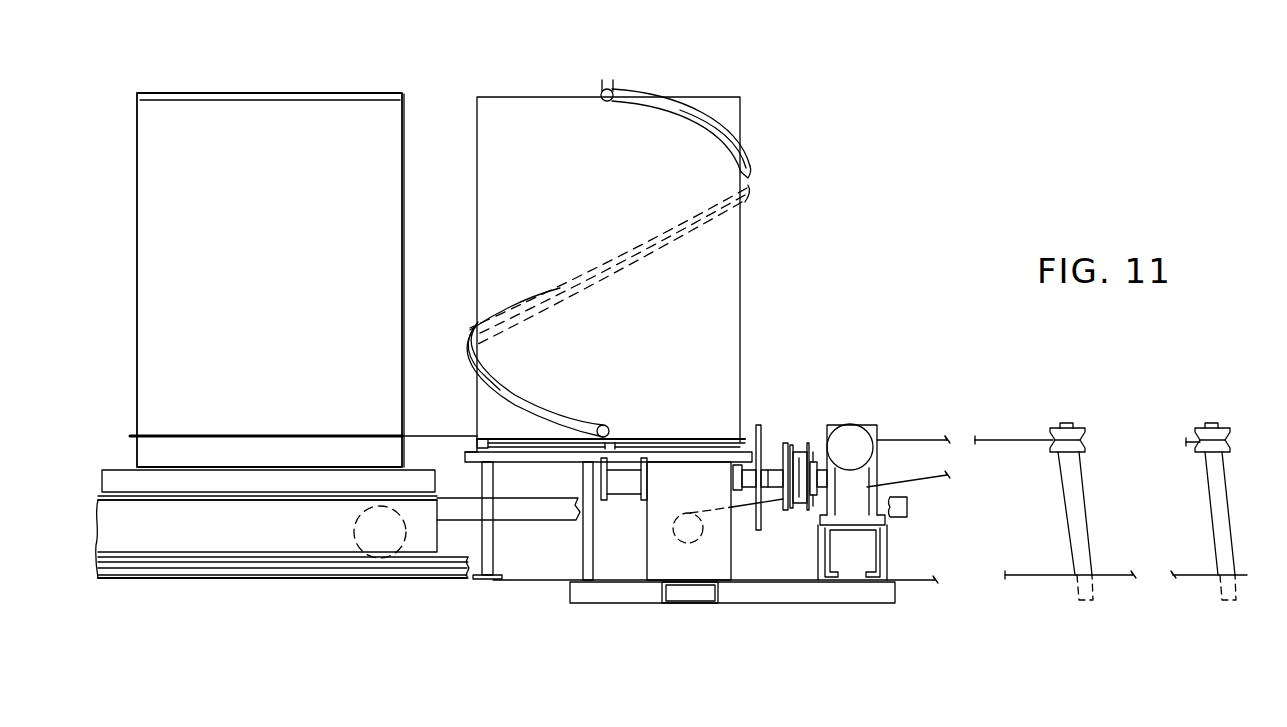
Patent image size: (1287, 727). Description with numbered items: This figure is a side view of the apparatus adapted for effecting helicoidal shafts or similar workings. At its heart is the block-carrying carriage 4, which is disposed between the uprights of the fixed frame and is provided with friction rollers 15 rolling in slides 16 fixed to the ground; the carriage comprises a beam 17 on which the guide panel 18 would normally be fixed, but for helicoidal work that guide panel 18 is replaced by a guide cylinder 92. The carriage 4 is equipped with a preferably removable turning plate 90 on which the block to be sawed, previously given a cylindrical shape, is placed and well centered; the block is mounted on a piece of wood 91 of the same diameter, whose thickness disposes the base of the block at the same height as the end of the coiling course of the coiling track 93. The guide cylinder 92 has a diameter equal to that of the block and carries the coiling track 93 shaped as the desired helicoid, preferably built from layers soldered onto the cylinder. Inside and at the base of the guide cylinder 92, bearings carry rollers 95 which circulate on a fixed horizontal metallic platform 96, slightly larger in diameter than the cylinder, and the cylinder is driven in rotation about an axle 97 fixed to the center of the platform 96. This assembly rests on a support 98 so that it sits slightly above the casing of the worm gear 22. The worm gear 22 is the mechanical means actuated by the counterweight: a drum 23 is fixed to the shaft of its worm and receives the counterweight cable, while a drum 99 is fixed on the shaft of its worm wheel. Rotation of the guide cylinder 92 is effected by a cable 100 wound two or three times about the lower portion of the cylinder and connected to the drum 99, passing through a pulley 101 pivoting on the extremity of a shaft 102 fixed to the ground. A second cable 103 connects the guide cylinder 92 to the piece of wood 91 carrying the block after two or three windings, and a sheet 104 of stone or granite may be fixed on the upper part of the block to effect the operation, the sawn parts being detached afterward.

The block-carrying carriage 4 is at (276, 530).
The friction rollers 15 is at (370, 542).
The slides 16 is at (428, 572).
The beam 17 is at (550, 507).
The guide panel 18 is at (762, 257).
The worm gear 22 is at (680, 568).
The drum 23 is at (621, 483).
The turning plate 90 is at (122, 480).
The piece of wood 91 is at (140, 452).
The guide cylinder 92 is at (540, 128).
The coiling track 93 is at (662, 112).
The rollers 95 is at (488, 446).
The platform 96 is at (477, 447).
The axle 97 is at (612, 446).
The support 98 is at (548, 455).
The drum 99 is at (703, 523).
The cable 100 is at (888, 446).
The pulley 101 is at (1192, 433).
The shaft 102 is at (1080, 530).
The second cable 103 is at (461, 437).
The sheet 104 is at (302, 93).